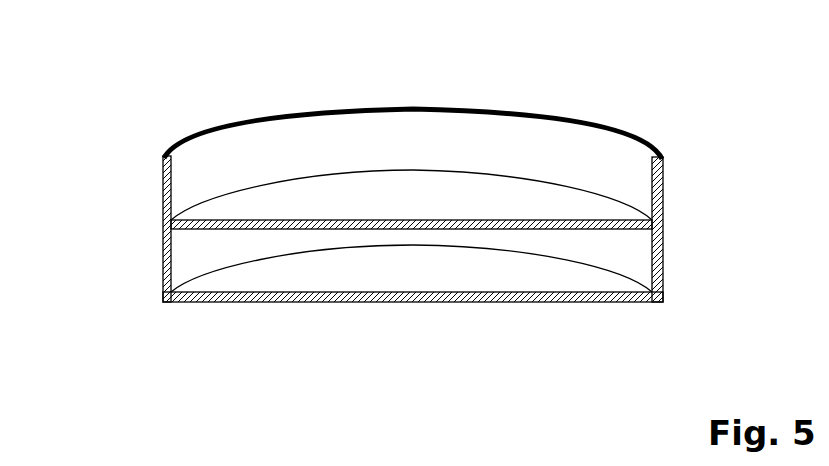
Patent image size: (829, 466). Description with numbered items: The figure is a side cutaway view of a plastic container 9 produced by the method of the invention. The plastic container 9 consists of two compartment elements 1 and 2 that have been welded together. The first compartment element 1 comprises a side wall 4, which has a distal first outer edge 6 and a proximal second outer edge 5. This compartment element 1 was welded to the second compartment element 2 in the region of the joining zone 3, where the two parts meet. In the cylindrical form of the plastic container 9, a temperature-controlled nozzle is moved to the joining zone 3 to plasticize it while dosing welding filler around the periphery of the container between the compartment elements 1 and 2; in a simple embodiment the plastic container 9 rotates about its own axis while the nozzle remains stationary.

The compartment element 1 is at (523, 279).
The second compartment element 2 is at (512, 148).
The joining zone 3 is at (664, 230).
The side wall 4 is at (163, 277).
The proximal second outer edge 5 is at (163, 298).
The distal first outer edge 6 is at (163, 237).
The plastic container 9 is at (268, 137).